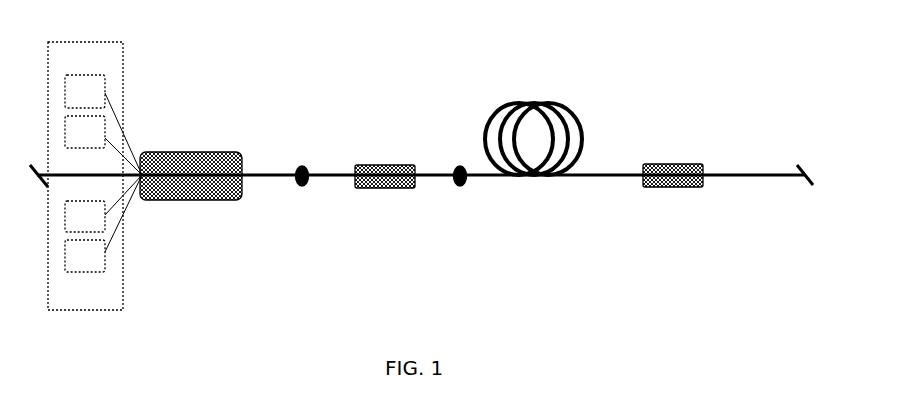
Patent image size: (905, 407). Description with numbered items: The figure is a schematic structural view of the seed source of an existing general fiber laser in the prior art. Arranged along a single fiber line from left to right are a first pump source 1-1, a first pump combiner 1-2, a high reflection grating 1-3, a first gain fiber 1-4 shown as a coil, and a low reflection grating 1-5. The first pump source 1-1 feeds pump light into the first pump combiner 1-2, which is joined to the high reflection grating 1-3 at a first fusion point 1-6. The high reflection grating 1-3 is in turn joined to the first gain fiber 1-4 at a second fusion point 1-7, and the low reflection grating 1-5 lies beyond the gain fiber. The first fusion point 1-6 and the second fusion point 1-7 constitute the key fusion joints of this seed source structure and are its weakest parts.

The first pump source 1-1 is at (83, 62).
The first pump combiner 1-2 is at (200, 163).
The high reflection grating 1-3 is at (357, 177).
The first gain fiber 1-4 is at (525, 142).
The low reflection grating 1-5 is at (660, 175).
The first fusion point 1-6 is at (292, 177).
The second fusion point 1-7 is at (477, 177).